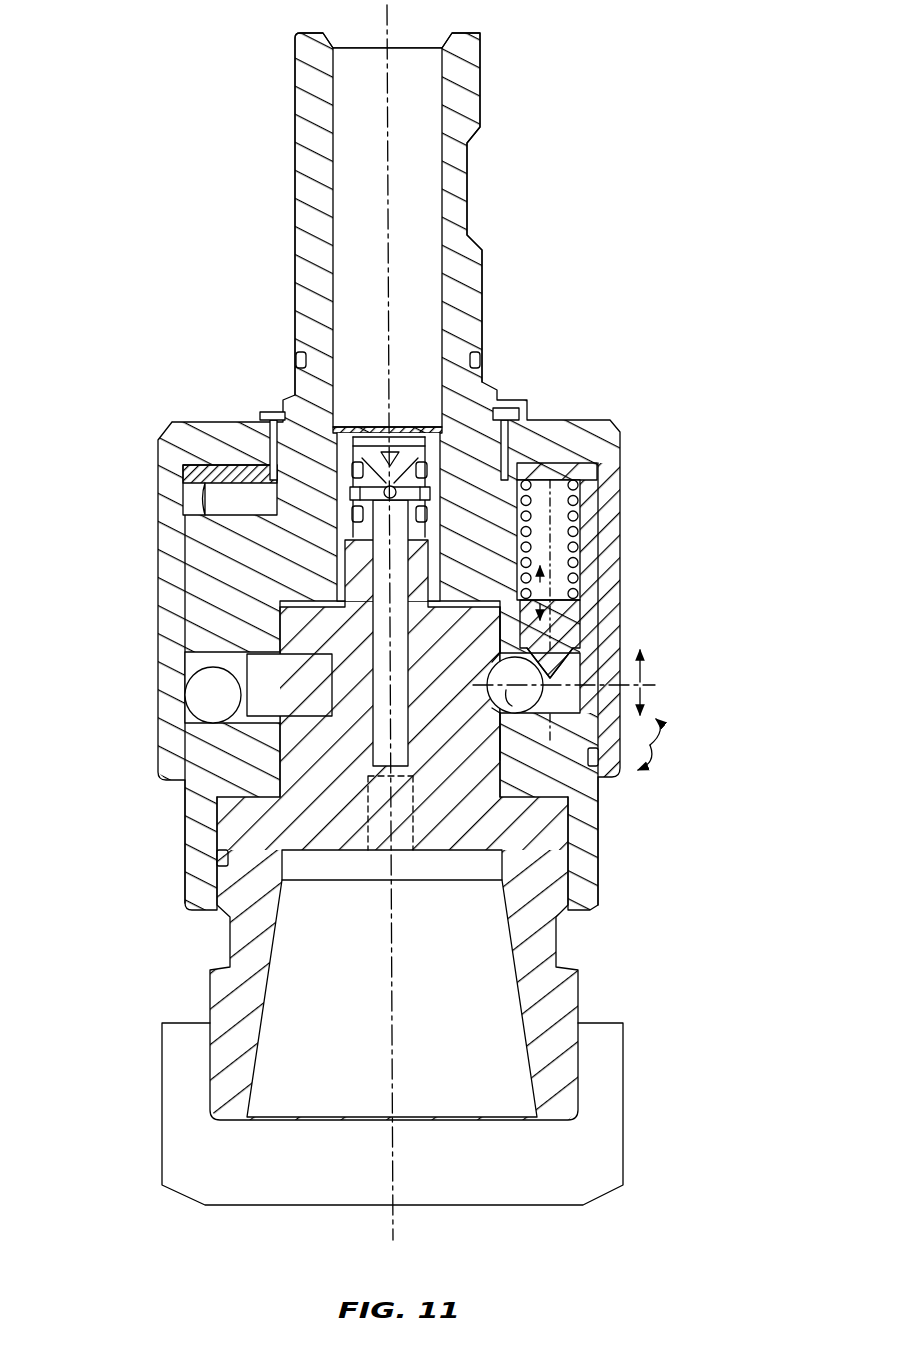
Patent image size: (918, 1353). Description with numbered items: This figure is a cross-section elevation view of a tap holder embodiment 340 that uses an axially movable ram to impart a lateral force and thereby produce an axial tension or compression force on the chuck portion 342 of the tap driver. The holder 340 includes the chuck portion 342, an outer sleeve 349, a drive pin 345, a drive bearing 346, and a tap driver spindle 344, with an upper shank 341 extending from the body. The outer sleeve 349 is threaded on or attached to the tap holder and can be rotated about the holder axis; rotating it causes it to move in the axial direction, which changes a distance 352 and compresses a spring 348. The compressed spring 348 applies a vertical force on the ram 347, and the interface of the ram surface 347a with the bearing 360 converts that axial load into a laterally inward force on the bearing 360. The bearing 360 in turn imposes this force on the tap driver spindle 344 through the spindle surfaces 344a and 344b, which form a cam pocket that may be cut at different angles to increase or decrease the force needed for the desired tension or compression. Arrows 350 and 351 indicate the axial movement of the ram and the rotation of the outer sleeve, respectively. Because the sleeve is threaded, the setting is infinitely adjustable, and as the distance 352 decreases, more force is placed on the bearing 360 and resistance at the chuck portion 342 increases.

The holder 340 is at (578, 240).
The tube 341 is at (315, 203).
The chuck portion 342 is at (315, 1086).
The tap driver spindle 344 is at (525, 890).
The tap driver spindle surface 344a is at (488, 664).
The tap driver spindle surface 344b is at (488, 706).
The drive pin 345 is at (285, 690).
The drive bearing 346 is at (222, 698).
The ram 347 is at (562, 612).
The ram surface 347a is at (552, 660).
The spring 348 is at (590, 562).
The outer sleeve 349 is at (600, 440).
The axial movement arrow 350 is at (642, 685).
The rotational movement arrow 351 is at (660, 768).
The distance 352 is at (205, 500).
The bearing 360 is at (505, 707).